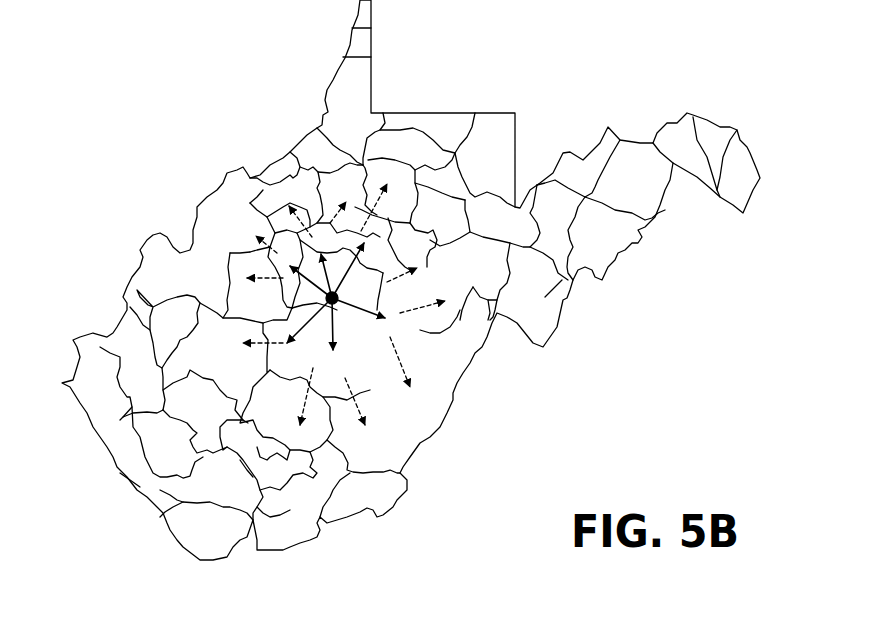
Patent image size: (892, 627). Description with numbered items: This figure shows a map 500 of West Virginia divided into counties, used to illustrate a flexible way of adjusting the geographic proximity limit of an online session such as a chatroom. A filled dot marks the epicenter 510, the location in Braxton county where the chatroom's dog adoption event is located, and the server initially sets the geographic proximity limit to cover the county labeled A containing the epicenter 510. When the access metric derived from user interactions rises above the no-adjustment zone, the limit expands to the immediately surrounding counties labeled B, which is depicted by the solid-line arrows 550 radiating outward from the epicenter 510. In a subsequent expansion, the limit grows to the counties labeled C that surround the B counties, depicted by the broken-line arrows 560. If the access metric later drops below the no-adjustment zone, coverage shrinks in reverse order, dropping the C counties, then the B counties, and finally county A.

The map 500 is at (142, 36).
The epicenter 510 is at (327, 300).
The first tier propagation arrows 550 is at (407, 327).
The second tier propagation arrows 560 is at (427, 380).